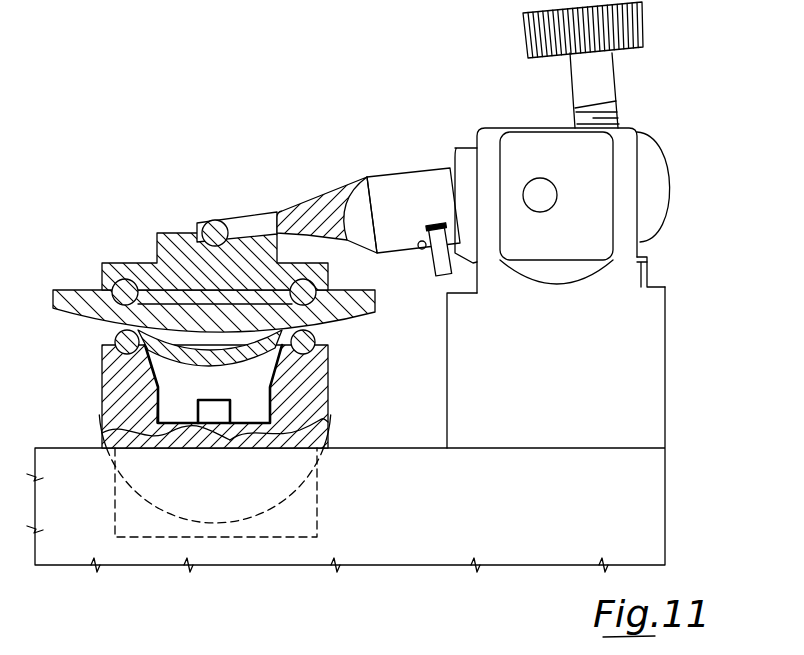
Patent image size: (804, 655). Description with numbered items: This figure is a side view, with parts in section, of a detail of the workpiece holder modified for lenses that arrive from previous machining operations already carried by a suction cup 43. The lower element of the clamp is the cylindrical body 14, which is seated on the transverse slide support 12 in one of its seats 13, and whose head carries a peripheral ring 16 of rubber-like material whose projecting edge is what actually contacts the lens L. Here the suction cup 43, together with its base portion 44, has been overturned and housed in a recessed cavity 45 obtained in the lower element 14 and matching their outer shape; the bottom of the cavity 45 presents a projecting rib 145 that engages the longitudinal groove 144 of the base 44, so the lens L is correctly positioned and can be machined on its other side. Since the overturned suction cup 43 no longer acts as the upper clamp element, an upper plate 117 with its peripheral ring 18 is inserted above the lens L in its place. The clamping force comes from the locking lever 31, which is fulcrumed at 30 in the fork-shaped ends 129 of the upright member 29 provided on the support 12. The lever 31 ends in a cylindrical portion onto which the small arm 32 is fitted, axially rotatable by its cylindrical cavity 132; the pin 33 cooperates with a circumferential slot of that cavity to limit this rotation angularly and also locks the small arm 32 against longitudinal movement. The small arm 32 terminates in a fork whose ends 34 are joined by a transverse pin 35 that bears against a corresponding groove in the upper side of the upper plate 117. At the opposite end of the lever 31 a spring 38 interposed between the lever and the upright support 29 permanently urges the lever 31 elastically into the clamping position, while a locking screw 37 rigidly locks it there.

The transverse slide support 12 is at (653, 492).
The seat 13 is at (322, 517).
The cylindrical body 14 is at (113, 377).
The peripheral ring 16 is at (318, 338).
The peripheral ring 18 is at (110, 287).
The upright member 29 is at (652, 352).
The fulcrum 30 is at (542, 201).
The locking lever 31 is at (652, 148).
The small arm 32 is at (358, 195).
The pin 33 is at (442, 268).
The fork ends 34 is at (248, 217).
The transverse pin 35 is at (213, 225).
The locking screw 37 is at (610, 75).
The spring 38 is at (643, 262).
The suction cup 43 is at (272, 367).
The base portion 44 is at (263, 408).
The recessed cavity 45 is at (163, 411).
The upper plate 117 is at (172, 252).
The fork-shaped ends 129 is at (628, 200).
The cylindrical cavity 132 is at (415, 182).
The longitudinal groove 144 is at (157, 440).
The projecting rib 145 is at (213, 415).
The lens L is at (86, 313).